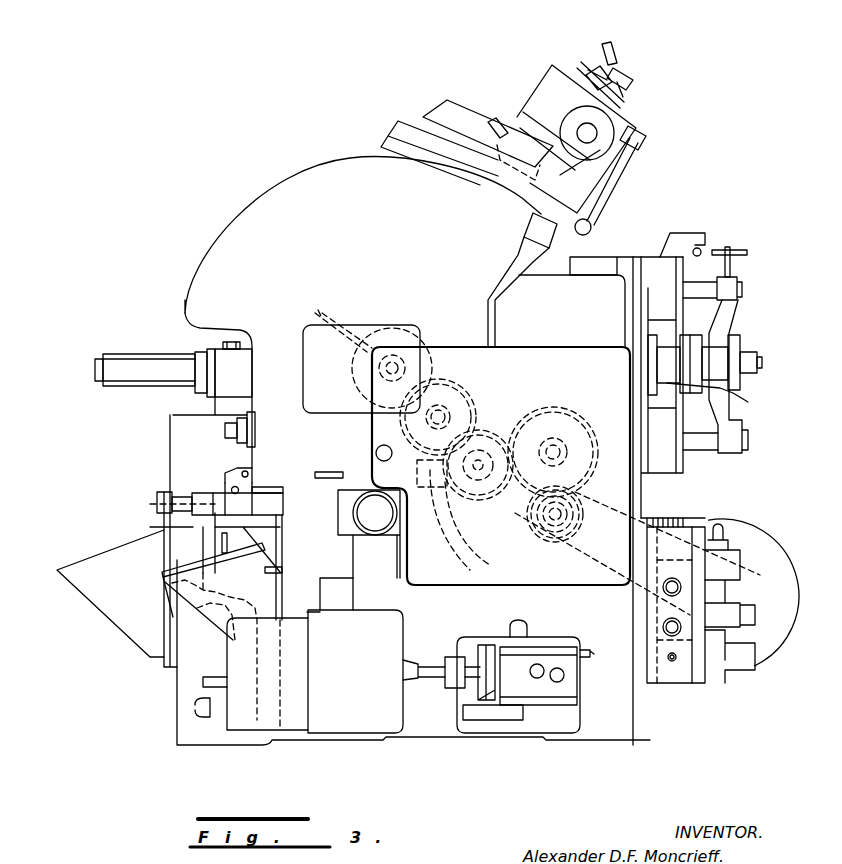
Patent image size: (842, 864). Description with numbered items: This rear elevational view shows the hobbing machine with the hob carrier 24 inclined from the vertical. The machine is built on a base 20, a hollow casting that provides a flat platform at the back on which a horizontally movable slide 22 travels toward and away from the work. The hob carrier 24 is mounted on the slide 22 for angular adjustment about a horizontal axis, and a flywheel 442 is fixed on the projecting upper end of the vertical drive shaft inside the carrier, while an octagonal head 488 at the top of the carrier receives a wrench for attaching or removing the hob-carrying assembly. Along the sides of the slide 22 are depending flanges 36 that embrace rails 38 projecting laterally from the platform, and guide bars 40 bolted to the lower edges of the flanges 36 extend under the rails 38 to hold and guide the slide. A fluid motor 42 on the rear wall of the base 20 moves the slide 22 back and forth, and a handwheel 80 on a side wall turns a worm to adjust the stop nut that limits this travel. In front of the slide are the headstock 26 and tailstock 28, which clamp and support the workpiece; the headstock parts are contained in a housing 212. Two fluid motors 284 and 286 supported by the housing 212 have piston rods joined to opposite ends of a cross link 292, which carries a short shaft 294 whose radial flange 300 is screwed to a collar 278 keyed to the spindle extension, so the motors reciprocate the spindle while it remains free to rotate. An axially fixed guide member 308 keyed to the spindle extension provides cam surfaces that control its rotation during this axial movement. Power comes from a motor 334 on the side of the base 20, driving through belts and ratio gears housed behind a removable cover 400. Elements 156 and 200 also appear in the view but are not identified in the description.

The base 20 is at (640, 722).
The slide 22 is at (318, 444).
The hob carrier 24 is at (390, 132).
The headstock 26 is at (627, 253).
The tailstock 28 is at (185, 349).
The depending flanges 36 is at (228, 490).
The rails 38 is at (262, 480).
The guide bars 40 is at (283, 490).
The fluid motor 42 is at (358, 513).
The handwheel 80 is at (207, 524).
The pin 156 is at (222, 428).
The plunger 200 is at (125, 383).
The housing 212 is at (578, 321).
The collar 278 is at (731, 349).
The fluid motor 284 is at (590, 257).
The fluid motor 286 is at (655, 475).
The cross link 292 is at (732, 318).
The shaft 294 is at (742, 365).
The radial flange 300 is at (697, 343).
The axially fixed guide member 308 is at (725, 398).
The motor 334 is at (747, 533).
The removable cover 400 is at (592, 382).
The flywheel 442 is at (442, 105).
The octagonal head 488 is at (620, 47).